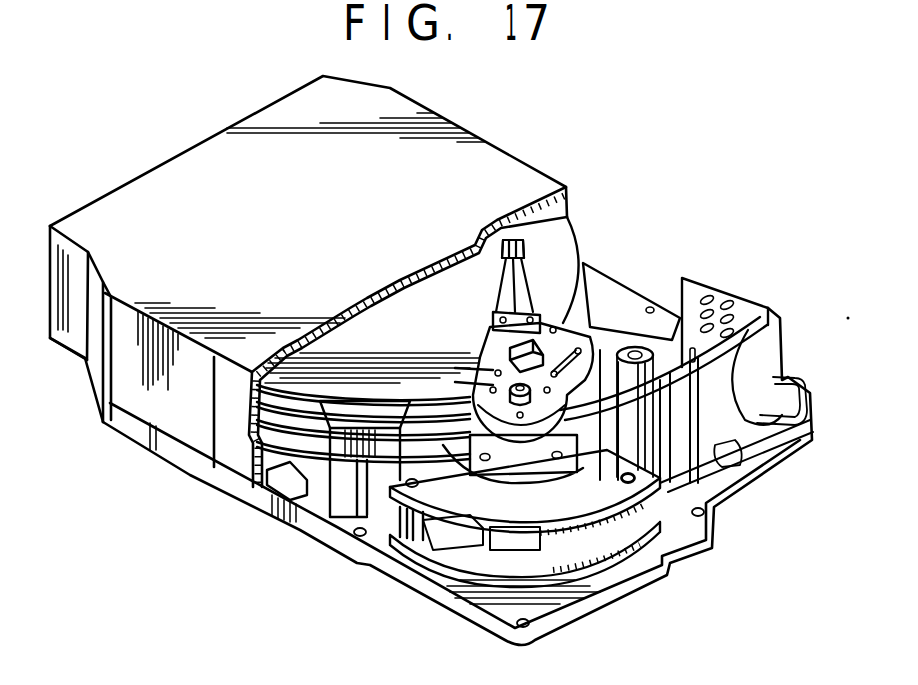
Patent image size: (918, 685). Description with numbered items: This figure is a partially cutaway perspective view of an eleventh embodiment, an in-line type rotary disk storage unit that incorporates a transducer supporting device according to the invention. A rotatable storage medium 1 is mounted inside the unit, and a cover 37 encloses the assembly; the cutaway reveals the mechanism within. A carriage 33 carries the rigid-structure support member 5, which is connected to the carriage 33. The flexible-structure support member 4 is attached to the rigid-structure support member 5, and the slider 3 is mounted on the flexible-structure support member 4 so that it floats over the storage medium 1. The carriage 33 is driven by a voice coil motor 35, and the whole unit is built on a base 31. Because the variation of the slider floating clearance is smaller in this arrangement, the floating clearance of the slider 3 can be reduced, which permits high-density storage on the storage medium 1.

The storage medium 1 is at (365, 332).
The slider 3 is at (523, 245).
The flexible-structure support member 4 is at (513, 249).
The rigid-structure support member 5 is at (507, 292).
The base 31 is at (315, 532).
The carriage 33 is at (597, 290).
The voice coil motor 35 is at (520, 555).
The cover 37 is at (457, 163).